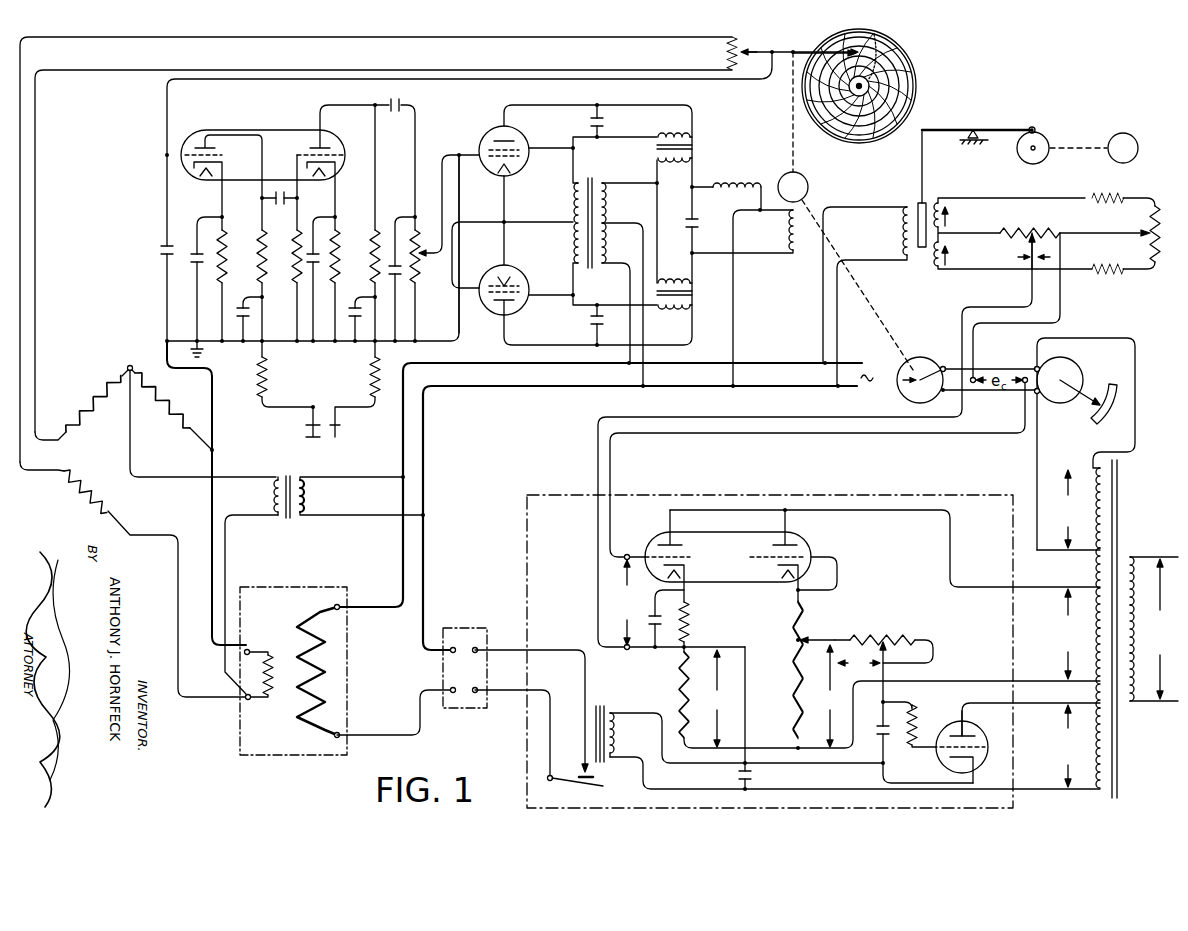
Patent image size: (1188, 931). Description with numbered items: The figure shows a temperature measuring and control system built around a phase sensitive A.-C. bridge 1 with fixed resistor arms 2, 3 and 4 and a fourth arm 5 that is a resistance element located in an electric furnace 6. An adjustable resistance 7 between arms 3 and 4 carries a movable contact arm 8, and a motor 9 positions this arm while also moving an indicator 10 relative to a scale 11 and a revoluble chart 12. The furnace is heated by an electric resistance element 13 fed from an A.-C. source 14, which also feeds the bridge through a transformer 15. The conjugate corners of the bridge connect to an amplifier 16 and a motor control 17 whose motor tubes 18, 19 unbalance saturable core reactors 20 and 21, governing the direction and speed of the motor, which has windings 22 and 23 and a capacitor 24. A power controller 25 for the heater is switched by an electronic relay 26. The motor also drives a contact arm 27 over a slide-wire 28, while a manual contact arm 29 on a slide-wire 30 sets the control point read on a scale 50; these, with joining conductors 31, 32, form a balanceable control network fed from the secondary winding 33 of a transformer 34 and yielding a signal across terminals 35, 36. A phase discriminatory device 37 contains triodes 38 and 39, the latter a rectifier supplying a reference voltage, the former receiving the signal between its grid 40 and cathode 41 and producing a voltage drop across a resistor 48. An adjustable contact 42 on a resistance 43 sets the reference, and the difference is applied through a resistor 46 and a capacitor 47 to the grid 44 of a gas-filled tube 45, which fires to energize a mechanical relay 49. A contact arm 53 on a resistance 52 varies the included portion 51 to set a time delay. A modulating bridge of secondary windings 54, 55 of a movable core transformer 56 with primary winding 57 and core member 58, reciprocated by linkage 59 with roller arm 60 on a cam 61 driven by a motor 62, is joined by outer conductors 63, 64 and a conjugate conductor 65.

The phase sensitive A.-C. bridge 1 is at (106, 456).
The fixed resistor arm 2 is at (158, 394).
The fixed resistor arm 3 is at (88, 401).
The fixed resistor arm 4 is at (71, 499).
The resistance element arm 5 is at (274, 692).
The electric furnace 6 is at (290, 583).
The adjustable resistance 7 is at (722, 52).
The movable contact arm 8 is at (762, 52).
The motor 9 is at (822, 175).
The indicator 10 is at (794, 53).
The scale 11 is at (880, 42).
The revoluble chart 12 is at (914, 80).
The electric resistance element 13 is at (292, 634).
The A.-C. source 14 is at (476, 372).
The transformer 15 is at (324, 574).
The amplifier 16 is at (311, 270).
The motor control 17 is at (606, 235).
The motor tube 18 is at (492, 315).
The motor tube 19 is at (487, 127).
The saturable core reactor 20 is at (686, 294).
The saturable core reactor 21 is at (686, 147).
The motor winding 22 is at (737, 185).
The motor winding 23 is at (786, 236).
The capacitor 24 is at (688, 222).
The power controller 25 is at (458, 626).
The relay 26 is at (524, 535).
The contact arm 27 is at (931, 394).
The slide-wire 28 is at (897, 394).
The contact arm 29 is at (1068, 386).
The slide-wire 30 is at (1074, 362).
The joining conductor 31 is at (950, 357).
The joining conductor 32 is at (980, 398).
The secondary winding 33 is at (1101, 552).
The transformer 34 is at (1146, 545).
The terminal 35 is at (628, 554).
The terminal 36 is at (626, 615).
The phase discriminatory device 37 is at (722, 584).
The triode 38 is at (659, 517).
The triode 39 is at (829, 529).
The grid 40 is at (695, 553).
The cathode 41 is at (690, 570).
The adjustable contact 42 is at (820, 636).
The resistance 43 is at (782, 644).
The grid 44 is at (973, 729).
The gas-filled tube 45 is at (973, 764).
The resistor 46 is at (917, 716).
The capacitor 47 is at (876, 738).
The resistor 48 is at (677, 680).
The mechanical relay 49 is at (737, 728).
The scale 50 is at (1096, 420).
The resistance portion 51 is at (905, 712).
The resistance 52 is at (891, 629).
The contact arm 53 is at (896, 657).
The secondary winding 54 is at (951, 208).
The secondary winding 55 is at (951, 246).
The movable core transformer 56 is at (1004, 275).
The primary winding 57 is at (902, 235).
The movable magnetic core member 58 is at (920, 196).
The linkage 59 is at (919, 130).
The roller arm 60 is at (1032, 126).
The cam 61 is at (1016, 162).
The motor 62 is at (1121, 133).
The outer conductor 63 is at (1048, 198).
The outer conductor 64 is at (1081, 276).
The conjugate conductor 65 is at (1092, 232).